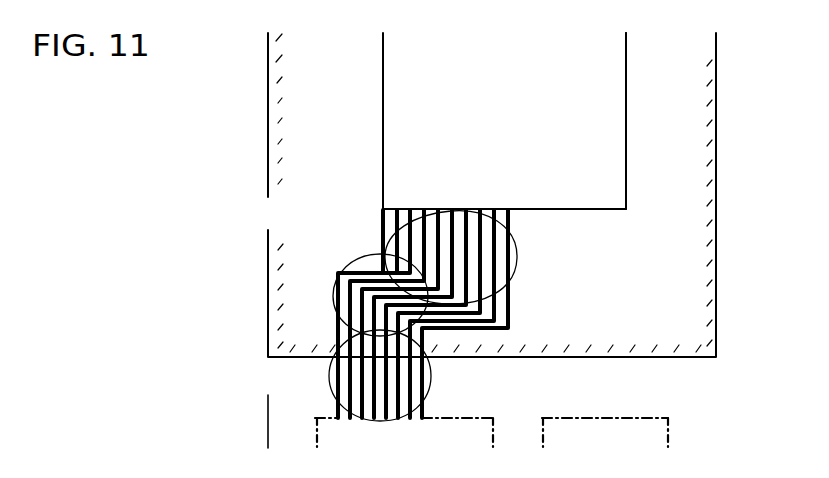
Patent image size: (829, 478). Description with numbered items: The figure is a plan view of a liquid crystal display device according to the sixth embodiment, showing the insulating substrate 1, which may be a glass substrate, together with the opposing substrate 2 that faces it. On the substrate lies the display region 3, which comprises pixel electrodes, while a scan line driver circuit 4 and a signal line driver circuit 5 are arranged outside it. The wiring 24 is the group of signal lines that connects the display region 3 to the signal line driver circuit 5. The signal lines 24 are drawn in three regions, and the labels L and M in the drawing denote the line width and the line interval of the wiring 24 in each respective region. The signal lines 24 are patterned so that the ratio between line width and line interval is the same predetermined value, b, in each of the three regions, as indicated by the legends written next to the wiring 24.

The insulating substrate 1 is at (717, 407).
The opposing substrate 2 is at (684, 107).
The display region 3 is at (627, 64).
The scan line driver circuit 4 is at (645, 432).
The signal line driver circuit 5 is at (328, 428).
The wiring 24 is at (338, 288).